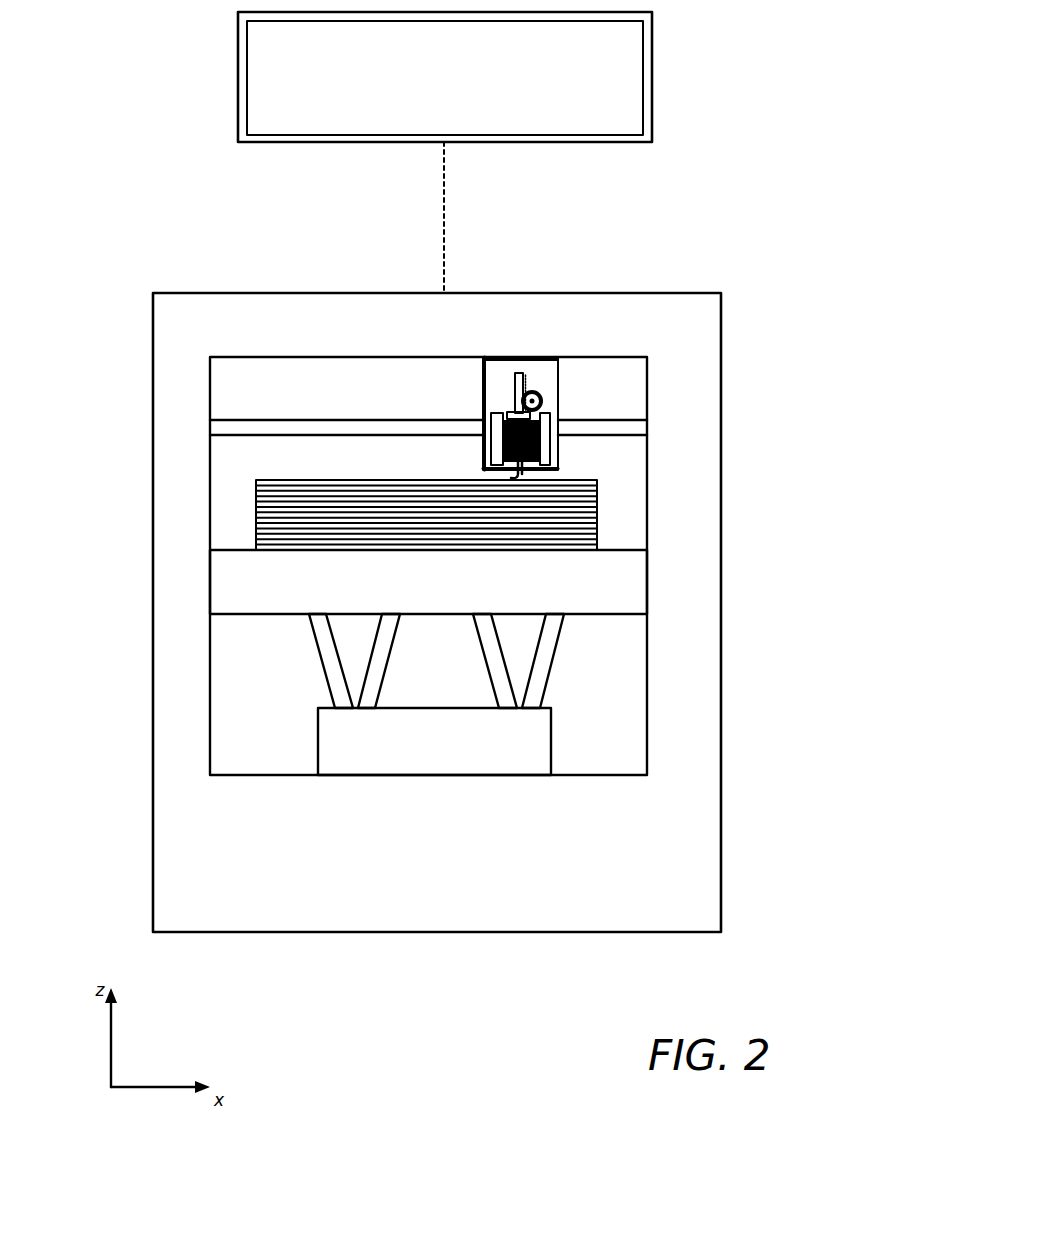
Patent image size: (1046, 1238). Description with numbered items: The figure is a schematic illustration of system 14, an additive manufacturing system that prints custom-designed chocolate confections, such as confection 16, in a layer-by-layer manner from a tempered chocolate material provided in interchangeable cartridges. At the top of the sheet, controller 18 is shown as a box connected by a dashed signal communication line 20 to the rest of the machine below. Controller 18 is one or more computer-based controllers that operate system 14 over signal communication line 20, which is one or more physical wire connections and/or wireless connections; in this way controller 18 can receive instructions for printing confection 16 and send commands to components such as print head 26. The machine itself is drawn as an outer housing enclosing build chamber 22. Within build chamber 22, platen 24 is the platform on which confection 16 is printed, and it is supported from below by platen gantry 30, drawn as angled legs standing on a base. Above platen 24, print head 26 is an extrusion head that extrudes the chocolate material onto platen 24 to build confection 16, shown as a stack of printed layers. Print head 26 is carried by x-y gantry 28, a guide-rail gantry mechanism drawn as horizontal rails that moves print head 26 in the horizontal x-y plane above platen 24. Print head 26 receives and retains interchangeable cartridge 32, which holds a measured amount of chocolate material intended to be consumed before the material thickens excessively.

The system 14 is at (758, 160).
The confection 16 is at (598, 510).
The controller 18 is at (240, 41).
The signal communication line 20 is at (445, 181).
The build chamber 22 is at (210, 663).
The platen 24 is at (640, 578).
The print head 26 is at (634, 368).
The x-y gantry 28 is at (237, 424).
The platen gantry 30 is at (580, 683).
The interchangeable cartridge 32 is at (540, 446).